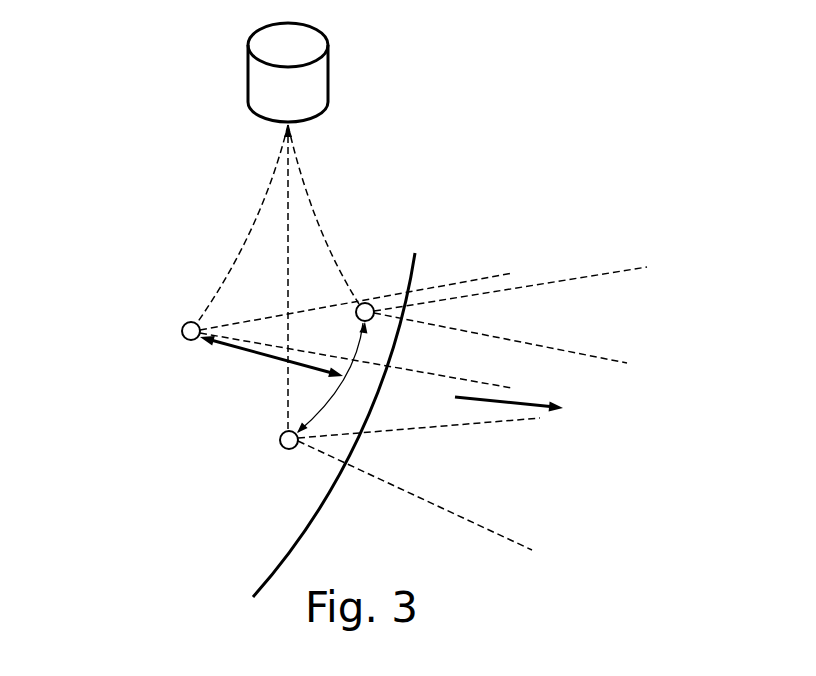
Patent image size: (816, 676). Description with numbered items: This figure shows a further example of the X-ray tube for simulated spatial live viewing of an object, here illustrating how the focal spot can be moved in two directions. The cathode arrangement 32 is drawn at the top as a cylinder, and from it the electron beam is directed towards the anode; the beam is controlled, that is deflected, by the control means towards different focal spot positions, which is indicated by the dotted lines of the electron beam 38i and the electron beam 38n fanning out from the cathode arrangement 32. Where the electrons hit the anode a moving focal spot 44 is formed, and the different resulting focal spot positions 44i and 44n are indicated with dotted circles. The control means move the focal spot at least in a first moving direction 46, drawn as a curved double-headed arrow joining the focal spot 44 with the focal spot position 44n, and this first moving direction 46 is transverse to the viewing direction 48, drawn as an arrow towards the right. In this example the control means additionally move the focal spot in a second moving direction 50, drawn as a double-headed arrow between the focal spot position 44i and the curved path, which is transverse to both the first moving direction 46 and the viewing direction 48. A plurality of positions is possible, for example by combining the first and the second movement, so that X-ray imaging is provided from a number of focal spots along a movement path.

The cathode arrangement 32 is at (330, 77).
The electron beam 38i is at (272, 180).
The electron beam 38n is at (288, 236).
The moving focal spot 44 is at (366, 303).
The focal spot position 44i is at (184, 338).
The focal spot position 44n is at (290, 450).
The first moving direction 46 is at (312, 410).
The viewing direction 48 is at (523, 402).
The second moving direction 50 is at (255, 355).